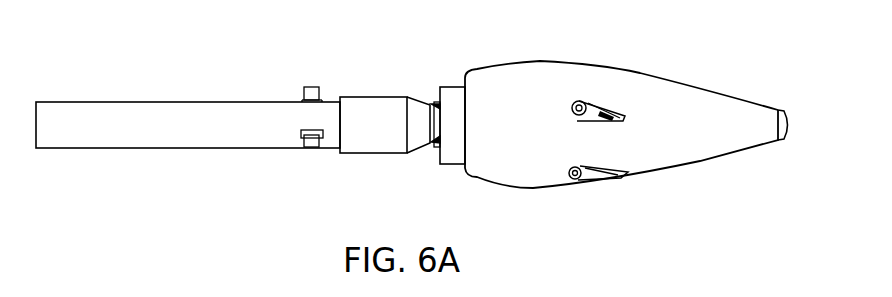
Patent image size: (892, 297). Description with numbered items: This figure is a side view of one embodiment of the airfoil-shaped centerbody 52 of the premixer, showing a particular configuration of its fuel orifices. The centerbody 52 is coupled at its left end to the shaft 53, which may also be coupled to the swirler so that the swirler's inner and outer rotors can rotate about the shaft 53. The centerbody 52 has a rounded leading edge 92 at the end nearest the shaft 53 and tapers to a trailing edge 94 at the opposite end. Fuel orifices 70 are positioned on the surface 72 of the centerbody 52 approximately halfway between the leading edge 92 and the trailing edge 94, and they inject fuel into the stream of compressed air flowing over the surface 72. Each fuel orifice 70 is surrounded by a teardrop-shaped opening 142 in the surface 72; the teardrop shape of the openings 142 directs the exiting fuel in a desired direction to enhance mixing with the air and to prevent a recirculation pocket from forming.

The shaft 53 is at (247, 125).
The leading edge 92 is at (477, 65).
The airfoil-shaped centerbody 52 is at (735, 85).
The surface 72 is at (672, 115).
The trailing edge 94 is at (797, 110).
The fuel orifices 70 is at (592, 100).
The teardrop-shaped openings 142 is at (607, 107).